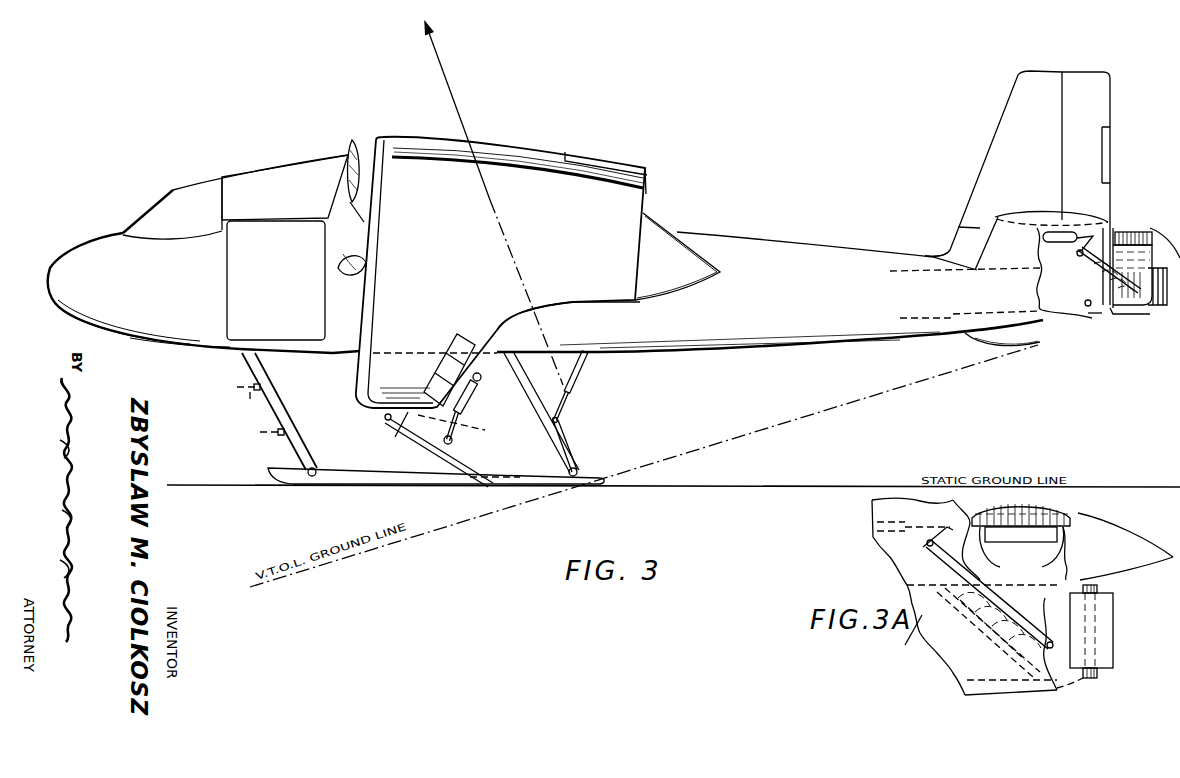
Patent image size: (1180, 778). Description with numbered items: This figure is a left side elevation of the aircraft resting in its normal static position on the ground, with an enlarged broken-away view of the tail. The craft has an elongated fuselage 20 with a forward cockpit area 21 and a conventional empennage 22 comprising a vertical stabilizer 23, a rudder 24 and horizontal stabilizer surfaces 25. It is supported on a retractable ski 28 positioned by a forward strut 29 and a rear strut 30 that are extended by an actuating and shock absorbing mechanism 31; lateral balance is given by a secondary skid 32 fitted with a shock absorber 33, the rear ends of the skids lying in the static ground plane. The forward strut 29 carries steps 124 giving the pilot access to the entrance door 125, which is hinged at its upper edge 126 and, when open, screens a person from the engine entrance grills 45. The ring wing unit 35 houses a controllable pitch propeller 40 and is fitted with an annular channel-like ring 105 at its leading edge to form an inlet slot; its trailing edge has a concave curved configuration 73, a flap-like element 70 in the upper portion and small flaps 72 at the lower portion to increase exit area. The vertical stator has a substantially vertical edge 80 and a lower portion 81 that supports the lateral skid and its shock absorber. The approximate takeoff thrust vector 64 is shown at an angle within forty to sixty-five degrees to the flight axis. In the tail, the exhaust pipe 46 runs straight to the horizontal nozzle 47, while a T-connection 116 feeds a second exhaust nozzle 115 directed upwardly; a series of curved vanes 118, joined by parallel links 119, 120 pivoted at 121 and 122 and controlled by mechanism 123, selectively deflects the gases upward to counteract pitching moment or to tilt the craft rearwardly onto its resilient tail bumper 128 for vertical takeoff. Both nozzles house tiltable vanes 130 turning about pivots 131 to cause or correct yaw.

In FIG. 3, the fuselage 20 is at (782, 306).
In FIG. 3, the cockpit area 21 is at (148, 292).
In FIG. 3, the empennage 22 is at (946, 225).
In FIG. 3, the vertical stabilizer 23 is at (1030, 150).
In FIG. 3, the rudder 24 is at (1092, 150).
In FIG. 3, the horizontal stabilizer surfaces 25 is at (1018, 258).
In FIG. 3, the retractable skid or ski 28 is at (408, 478).
In FIG. 3, the forward strut 29 is at (290, 418).
In FIG. 3, the strut 30 is at (554, 445).
In FIG. 3, the actuating and shock absorbing mechanism 31 is at (595, 370).
In FIG. 3, the secondary skid 32 is at (508, 480).
In FIG. 3, the shock absorber 33 is at (464, 426).
In FIG. 3, the ring wing unit 35 is at (500, 272).
In FIG. 3, the controllable pitch propeller 40 is at (352, 263).
In FIG. 3, the entrance grills 45 is at (352, 152).
In FIG. 3, the exhaust pipe 46 is at (1094, 320).
In FIG. 3A, the exhaust pipe 46 is at (903, 638).
In FIG. 3, the nozzle 47 is at (1158, 304).
In FIG. 3A, the nozzle 47 is at (1083, 680).
In FIG. 3, the thrust vector 64 is at (445, 86).
In FIG. 3, the flap-like element 70 is at (619, 166).
In FIG. 3, the small flaps 72 is at (455, 352).
In FIG. 3, the concave curved trailing edge configuration 73 is at (566, 306).
In FIG. 3, the substantially vertical edge 80 is at (486, 390).
In FIG. 3, the lower fin portion 81 is at (395, 437).
In FIG. 3, the annular channel-like ring 105 is at (367, 310).
In FIG. 3, the second exhaust nozzle 115 is at (1145, 231).
In FIG. 3A, the second exhaust nozzle 115 is at (1072, 512).
In FIG. 3, the T-connection 116 is at (1152, 246).
In FIG. 3A, the T-connection 116 is at (1068, 573).
In FIG. 3, the curved vanes 118 is at (1100, 313).
In FIG. 3A, the curved vanes 118 is at (972, 630).
In FIG. 3, the link 119 is at (1105, 235).
In FIG. 3A, the link 119 is at (1040, 643).
In FIG. 3, the link 120 is at (1085, 303).
In FIG. 3A, the link 120 is at (1005, 658).
In FIG. 3, the pivot 121 is at (1080, 253).
In FIG. 3, the pivot 122 is at (1078, 272).
In FIG. 3, the control mechanism 123 is at (1048, 232).
In FIG. 3, the steps 124 is at (270, 420).
In FIG. 3, the entrance door 125 is at (282, 288).
In FIG. 3, the upper edge 126 is at (298, 204).
In FIG. 3, the tail bumper 128 is at (1022, 344).
In FIG. 3, the vanes 130 is at (1120, 228).
In FIG. 3A, the vanes 130 is at (1020, 534).
In FIG. 3A, the pivots 131 is at (1046, 568).